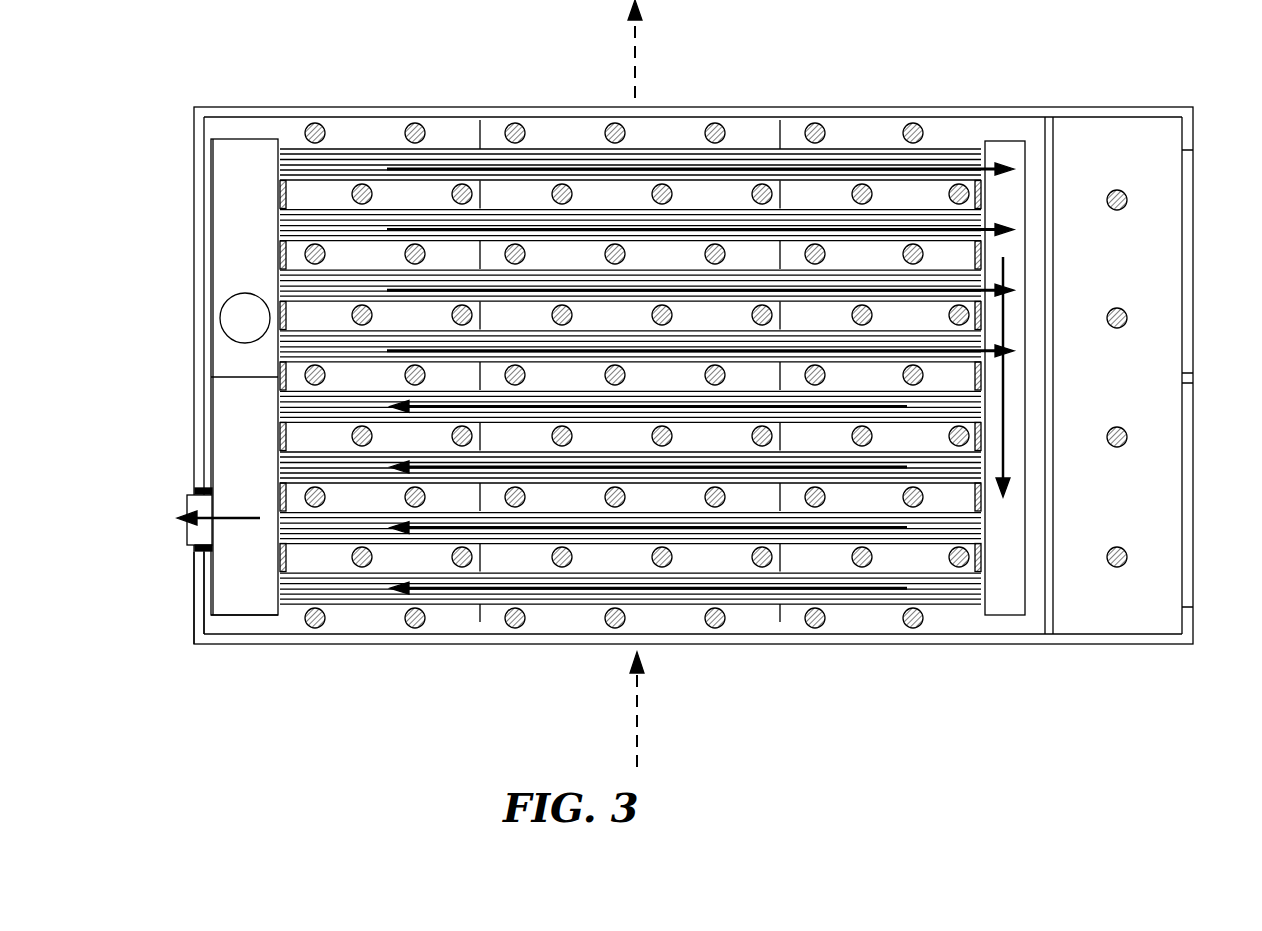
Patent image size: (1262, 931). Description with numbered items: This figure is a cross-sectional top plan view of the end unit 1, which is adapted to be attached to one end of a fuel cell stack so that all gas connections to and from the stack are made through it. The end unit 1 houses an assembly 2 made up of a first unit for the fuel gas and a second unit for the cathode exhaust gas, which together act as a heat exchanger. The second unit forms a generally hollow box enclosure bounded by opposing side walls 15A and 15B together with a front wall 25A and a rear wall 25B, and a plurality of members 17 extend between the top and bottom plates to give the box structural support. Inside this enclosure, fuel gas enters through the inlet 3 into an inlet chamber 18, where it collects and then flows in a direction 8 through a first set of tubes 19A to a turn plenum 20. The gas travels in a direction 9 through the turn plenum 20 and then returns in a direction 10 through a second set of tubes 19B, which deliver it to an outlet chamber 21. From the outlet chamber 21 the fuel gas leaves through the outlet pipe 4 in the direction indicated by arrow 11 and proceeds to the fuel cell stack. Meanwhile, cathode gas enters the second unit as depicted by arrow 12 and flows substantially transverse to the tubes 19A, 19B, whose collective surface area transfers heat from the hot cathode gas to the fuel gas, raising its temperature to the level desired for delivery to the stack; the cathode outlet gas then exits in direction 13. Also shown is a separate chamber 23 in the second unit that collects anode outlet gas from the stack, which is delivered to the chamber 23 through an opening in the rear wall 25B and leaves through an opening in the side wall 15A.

The end unit 1 is at (206, 100).
The assembly 2 is at (240, 140).
The inlet 3 is at (222, 308).
The outlet pipe 4 is at (187, 553).
The direction of fuel gas flow through first set of tubes 8 is at (503, 165).
The direction of fuel gas flow through turn plenum 9 is at (1005, 358).
The direction of fuel gas flow through second set of tubes 10 is at (585, 470).
The direction of fuel gas exit 11 is at (232, 513).
The direction of cathode gas entry 12 is at (641, 733).
The direction of cathode gas exit 13 is at (636, 27).
The side wall 15A is at (885, 644).
The side wall 15B is at (568, 117).
The members 17 is at (822, 133).
The inlet chamber 18 is at (233, 166).
The first set of tubes 19A is at (940, 165).
The second set of tubes 19B is at (445, 535).
The turn plenum 20 is at (1003, 560).
The outlet chamber 21 is at (245, 593).
The separate chamber 23 is at (1092, 162).
The front wall 25A is at (199, 164).
The rear wall 25B is at (1190, 333).